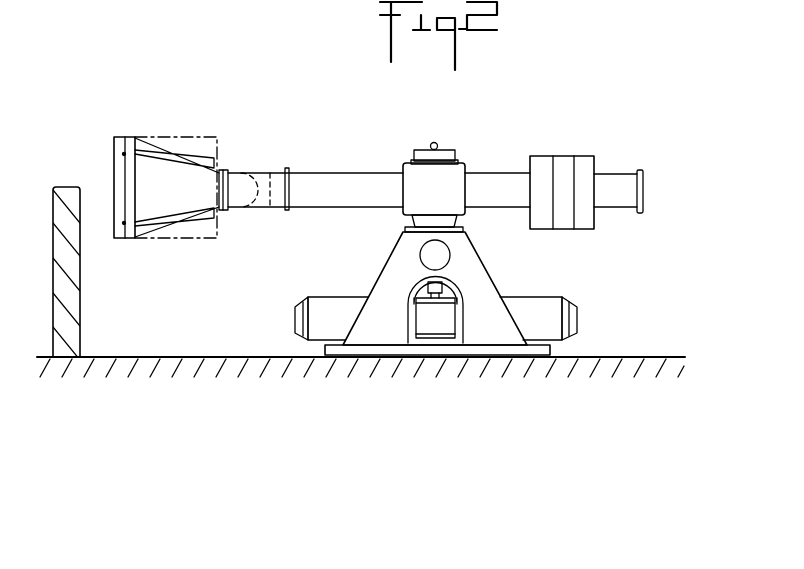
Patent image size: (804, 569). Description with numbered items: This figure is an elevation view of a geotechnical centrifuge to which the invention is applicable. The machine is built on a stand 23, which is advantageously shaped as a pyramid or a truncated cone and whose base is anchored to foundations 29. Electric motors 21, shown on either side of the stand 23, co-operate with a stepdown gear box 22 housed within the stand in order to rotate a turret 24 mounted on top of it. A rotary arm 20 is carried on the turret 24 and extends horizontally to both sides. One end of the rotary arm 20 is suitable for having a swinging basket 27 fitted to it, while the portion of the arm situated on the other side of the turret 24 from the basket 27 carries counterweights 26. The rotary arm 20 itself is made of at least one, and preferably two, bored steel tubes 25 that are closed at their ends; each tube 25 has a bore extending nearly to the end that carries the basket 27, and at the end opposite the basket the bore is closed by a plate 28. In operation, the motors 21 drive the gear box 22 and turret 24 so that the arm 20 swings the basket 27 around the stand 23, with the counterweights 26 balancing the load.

The rotary arm 20 is at (658, 179).
The electric motors 21 is at (343, 302).
The stepdown gear box 22 is at (447, 320).
The stand 23 is at (497, 282).
The turret 24 is at (447, 177).
The bored tube 25 is at (310, 198).
The counterweights 26 is at (580, 162).
The swinging basket 27 is at (167, 246).
The plate 28 is at (647, 207).
The foundations 29 is at (635, 357).